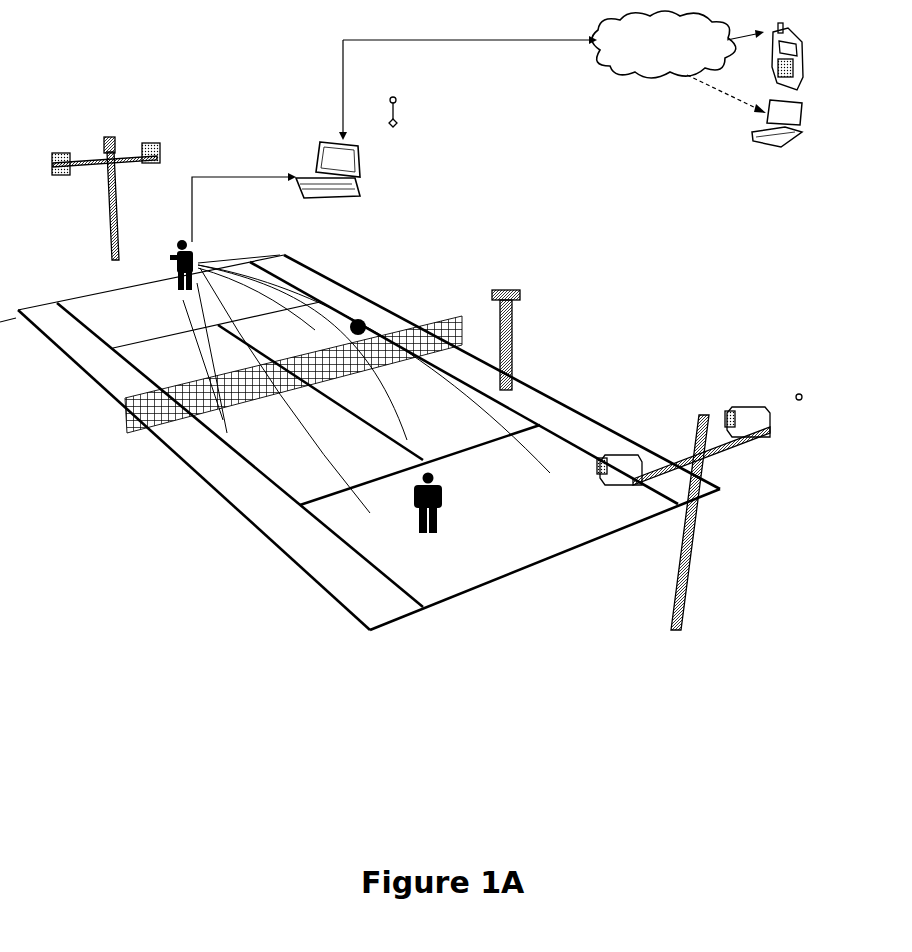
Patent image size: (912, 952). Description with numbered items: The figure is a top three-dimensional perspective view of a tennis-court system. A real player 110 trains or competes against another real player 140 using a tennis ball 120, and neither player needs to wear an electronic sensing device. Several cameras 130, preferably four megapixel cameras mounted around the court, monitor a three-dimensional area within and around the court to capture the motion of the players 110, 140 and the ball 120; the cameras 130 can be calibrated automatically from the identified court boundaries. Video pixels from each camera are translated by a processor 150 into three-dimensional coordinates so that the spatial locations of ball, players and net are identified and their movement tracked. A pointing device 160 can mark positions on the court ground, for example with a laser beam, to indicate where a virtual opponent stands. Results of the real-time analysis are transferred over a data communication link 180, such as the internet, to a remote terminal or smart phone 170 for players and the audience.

The real player 110 is at (447, 515).
The Tennis ball 120 is at (361, 318).
The cameras 130 is at (57, 157).
The real player 140 is at (178, 255).
The processor 150 is at (367, 158).
The pointing device 160 is at (520, 318).
The remote terminal or smart phone 170 is at (770, 78).
The data communication link / internet 180 is at (627, 85).